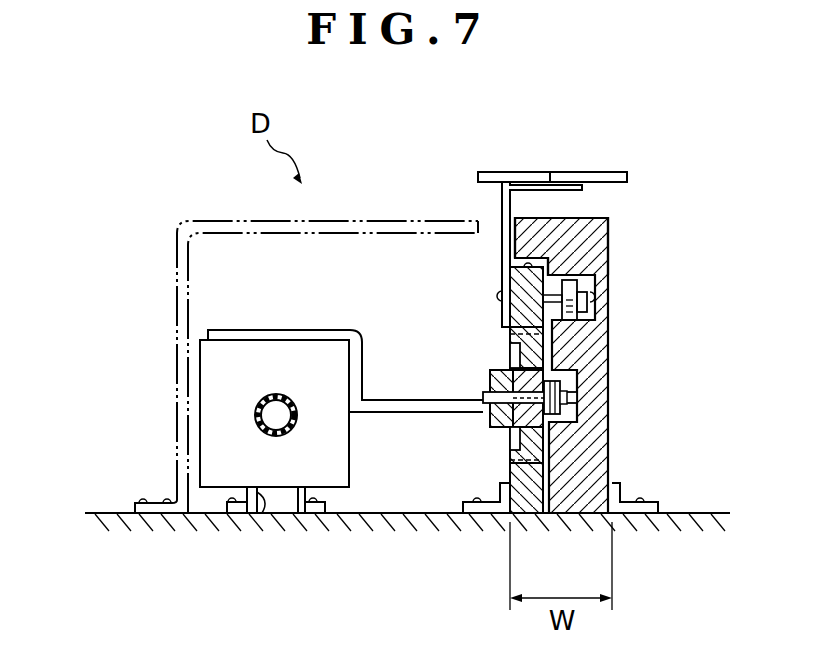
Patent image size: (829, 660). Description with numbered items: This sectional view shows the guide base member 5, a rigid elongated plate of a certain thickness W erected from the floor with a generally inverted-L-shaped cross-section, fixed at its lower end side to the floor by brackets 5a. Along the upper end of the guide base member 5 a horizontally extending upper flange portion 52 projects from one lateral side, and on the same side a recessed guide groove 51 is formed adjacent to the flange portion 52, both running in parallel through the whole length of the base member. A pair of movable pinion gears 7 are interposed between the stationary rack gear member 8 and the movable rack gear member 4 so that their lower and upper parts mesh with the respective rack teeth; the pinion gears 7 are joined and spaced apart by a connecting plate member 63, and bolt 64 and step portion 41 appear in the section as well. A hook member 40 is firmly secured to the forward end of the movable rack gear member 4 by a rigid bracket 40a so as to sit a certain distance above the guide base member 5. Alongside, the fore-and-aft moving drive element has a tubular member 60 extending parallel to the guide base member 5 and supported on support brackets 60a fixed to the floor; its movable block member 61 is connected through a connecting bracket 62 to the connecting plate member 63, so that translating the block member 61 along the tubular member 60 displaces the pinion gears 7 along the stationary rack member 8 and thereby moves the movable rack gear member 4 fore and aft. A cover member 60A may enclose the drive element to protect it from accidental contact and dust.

The movable rack gear member 4 is at (502, 307).
The guide base member 5 is at (603, 350).
The brackets 5a is at (650, 503).
The movable pinion gears 7 is at (512, 447).
The stationary rack gear member 8 is at (527, 497).
The hook member 40 is at (607, 173).
The rigid bracket 40a is at (502, 205).
The step portion 41 is at (593, 267).
The recessed guide groove 51 is at (592, 293).
The upper flange portion 52 is at (568, 220).
The tubular member 60 is at (287, 396).
The cover member 60A is at (177, 240).
The support brackets 60a is at (257, 496).
The movable block member 61 is at (343, 457).
The connecting bracket 62 is at (403, 400).
The connecting plate member 63 is at (492, 370).
The bolt 64 is at (483, 392).